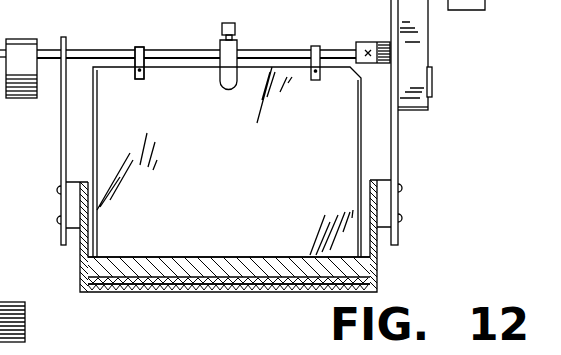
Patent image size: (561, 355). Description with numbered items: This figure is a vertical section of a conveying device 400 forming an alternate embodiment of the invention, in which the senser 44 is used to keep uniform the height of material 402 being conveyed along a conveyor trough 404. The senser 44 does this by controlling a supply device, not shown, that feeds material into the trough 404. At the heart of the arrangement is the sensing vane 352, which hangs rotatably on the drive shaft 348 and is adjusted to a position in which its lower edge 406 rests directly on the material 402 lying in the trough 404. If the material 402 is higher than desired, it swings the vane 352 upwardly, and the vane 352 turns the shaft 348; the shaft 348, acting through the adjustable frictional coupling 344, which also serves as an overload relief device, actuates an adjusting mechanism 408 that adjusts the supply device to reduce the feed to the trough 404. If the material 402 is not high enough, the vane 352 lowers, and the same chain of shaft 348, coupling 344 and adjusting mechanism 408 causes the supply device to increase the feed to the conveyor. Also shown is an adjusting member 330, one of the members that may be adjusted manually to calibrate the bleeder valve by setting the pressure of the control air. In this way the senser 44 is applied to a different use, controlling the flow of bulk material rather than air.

The senser 44 is at (122, 47).
The drive shaft 348 is at (264, 53).
The adjustable frictional coupling 344 is at (370, 41).
The adjusting mechanism 408 is at (428, 56).
The sensing vane 352 is at (249, 187).
The material 402 is at (378, 268).
The conveying device 400 is at (430, 223).
The conveyor trough 404 is at (292, 285).
The lower edge 406 is at (185, 260).
The adjusting member 330 is at (2, 302).